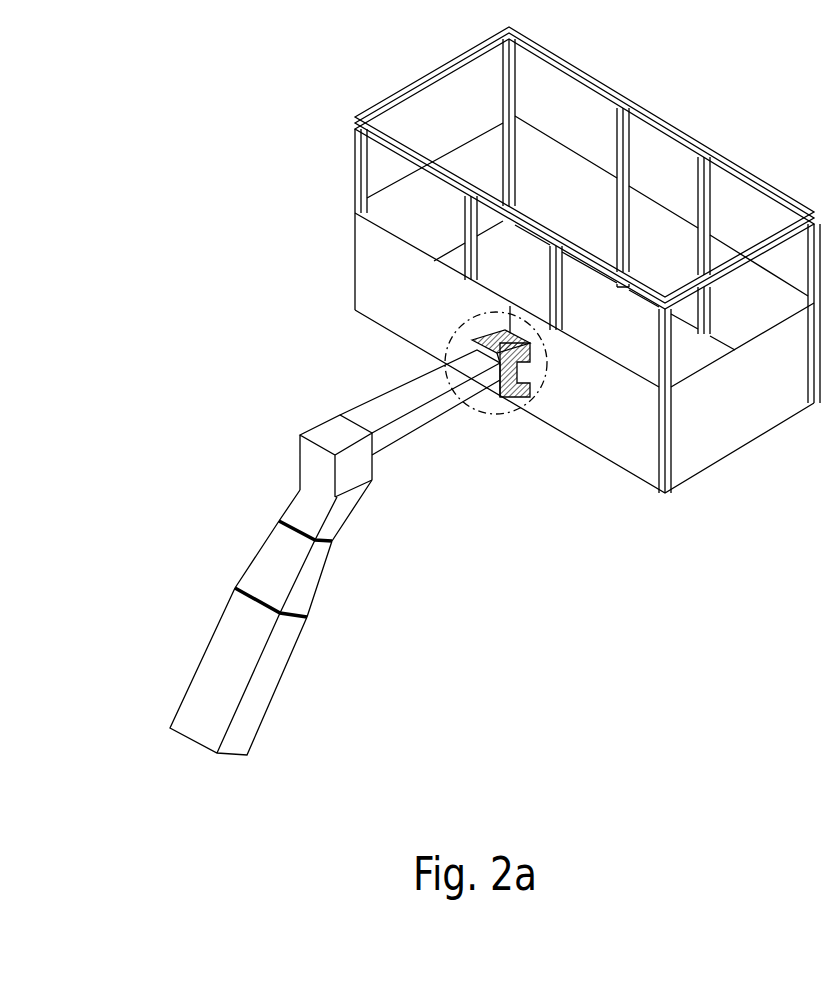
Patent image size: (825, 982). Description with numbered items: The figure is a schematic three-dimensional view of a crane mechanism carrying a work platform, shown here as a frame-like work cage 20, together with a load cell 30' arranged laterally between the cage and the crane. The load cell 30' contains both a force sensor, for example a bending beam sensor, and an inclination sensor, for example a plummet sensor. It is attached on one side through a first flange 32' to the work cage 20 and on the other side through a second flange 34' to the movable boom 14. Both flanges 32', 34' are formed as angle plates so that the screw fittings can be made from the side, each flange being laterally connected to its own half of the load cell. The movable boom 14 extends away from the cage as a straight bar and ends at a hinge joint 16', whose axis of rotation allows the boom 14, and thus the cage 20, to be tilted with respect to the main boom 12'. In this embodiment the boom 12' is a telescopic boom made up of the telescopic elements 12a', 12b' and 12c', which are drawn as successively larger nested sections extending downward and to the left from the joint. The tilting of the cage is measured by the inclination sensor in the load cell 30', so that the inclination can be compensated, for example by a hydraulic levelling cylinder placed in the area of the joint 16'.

The work cage 20 is at (779, 182).
The movable boom 14 is at (410, 400).
The load cell 30' is at (501, 385).
The first flange 32' is at (552, 378).
The second flange 34' is at (471, 417).
The boom 12' is at (290, 585).
The hinge joint 16' is at (369, 503).
The telescopic element 12a' is at (285, 482).
The telescopic element 12b' is at (254, 543).
The telescopic element 12c' is at (226, 636).